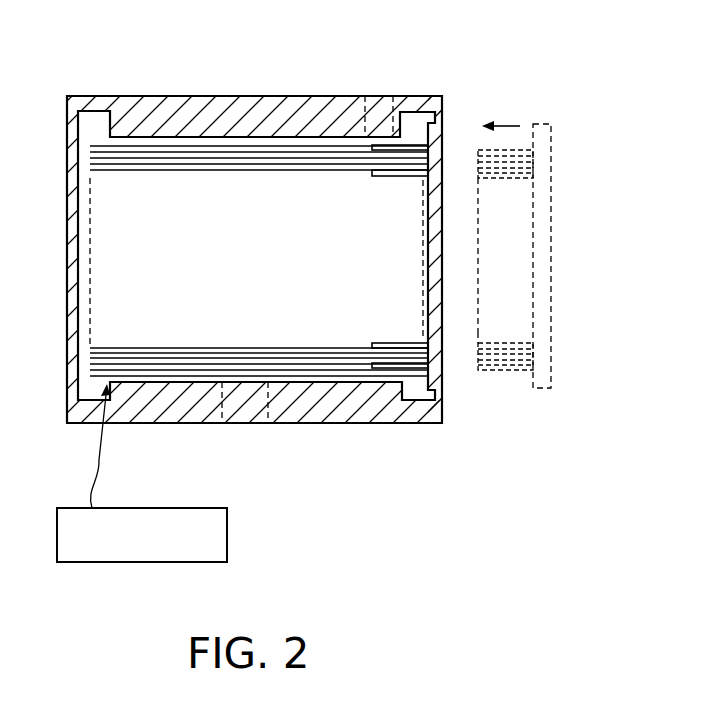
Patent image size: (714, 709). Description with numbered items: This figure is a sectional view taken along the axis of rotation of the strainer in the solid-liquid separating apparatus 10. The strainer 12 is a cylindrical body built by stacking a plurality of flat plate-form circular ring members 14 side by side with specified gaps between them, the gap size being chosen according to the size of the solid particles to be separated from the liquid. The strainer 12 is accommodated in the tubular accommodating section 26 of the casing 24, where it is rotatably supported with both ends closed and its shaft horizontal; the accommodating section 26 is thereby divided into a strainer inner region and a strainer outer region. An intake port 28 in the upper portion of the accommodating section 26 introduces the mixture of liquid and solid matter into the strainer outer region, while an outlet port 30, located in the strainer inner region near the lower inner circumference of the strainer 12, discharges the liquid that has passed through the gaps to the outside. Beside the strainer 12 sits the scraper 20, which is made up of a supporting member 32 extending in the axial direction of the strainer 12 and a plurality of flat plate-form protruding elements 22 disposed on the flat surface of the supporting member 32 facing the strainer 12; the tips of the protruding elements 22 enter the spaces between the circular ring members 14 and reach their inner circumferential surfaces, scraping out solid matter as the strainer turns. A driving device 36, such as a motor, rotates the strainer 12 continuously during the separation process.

The solid-liquid separating apparatus 10 is at (526, 78).
The strainer 12 is at (413, 138).
The flat plate-form circular ring members 14 is at (90, 162).
The scraper 20 is at (437, 382).
The protruding elements 22 is at (387, 180).
The casing 24 is at (129, 93).
The accommodating section 26 is at (96, 126).
The intake port 28 is at (374, 122).
The outlet port 30 is at (229, 412).
The supporting member 32 is at (550, 217).
The driving device 36 is at (227, 548).